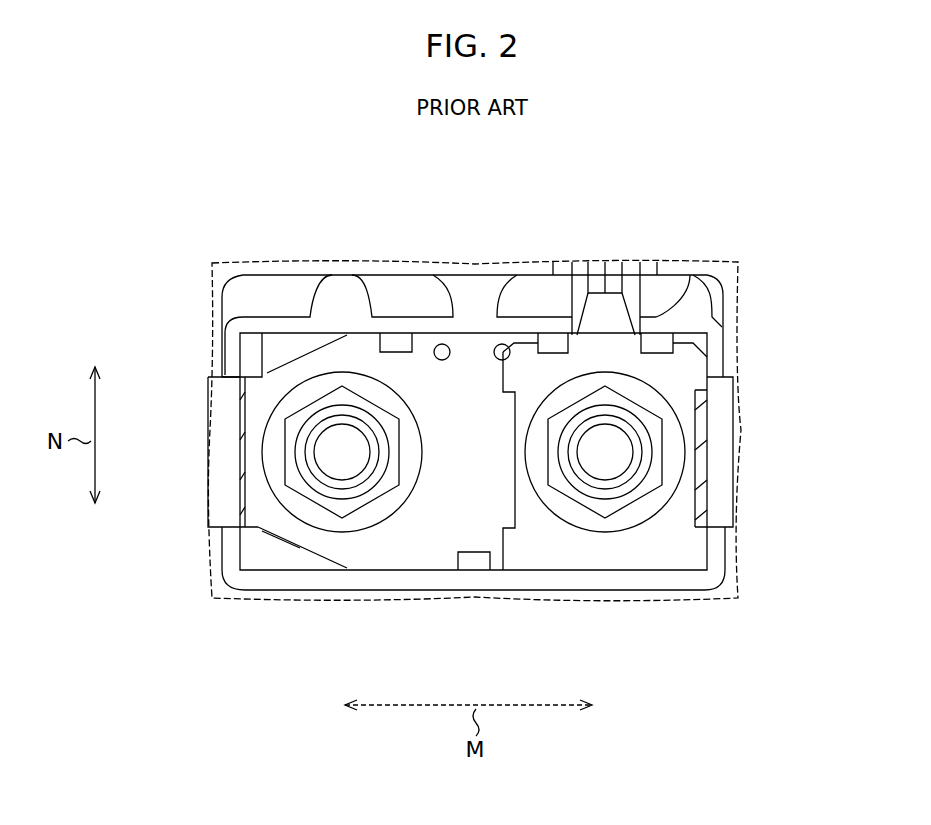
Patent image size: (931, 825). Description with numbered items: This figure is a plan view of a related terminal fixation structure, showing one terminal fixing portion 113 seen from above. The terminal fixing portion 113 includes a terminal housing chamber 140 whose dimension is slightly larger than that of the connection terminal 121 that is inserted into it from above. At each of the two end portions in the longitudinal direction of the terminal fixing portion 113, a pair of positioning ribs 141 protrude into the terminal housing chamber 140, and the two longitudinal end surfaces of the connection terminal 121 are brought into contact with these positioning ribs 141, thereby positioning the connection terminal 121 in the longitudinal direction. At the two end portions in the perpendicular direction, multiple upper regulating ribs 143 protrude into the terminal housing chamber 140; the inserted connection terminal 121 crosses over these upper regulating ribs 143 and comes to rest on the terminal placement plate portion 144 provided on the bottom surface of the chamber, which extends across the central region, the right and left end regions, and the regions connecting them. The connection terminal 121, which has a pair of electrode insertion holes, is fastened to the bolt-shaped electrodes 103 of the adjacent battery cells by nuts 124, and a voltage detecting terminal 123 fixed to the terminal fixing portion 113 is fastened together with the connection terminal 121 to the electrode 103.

The electrode 103 is at (342, 455).
The terminal fixing portion 113 is at (537, 583).
The connection terminal 121 is at (410, 540).
The voltage detecting terminal 123 is at (651, 555).
The nut 124 is at (296, 483).
The terminal housing chamber 140 is at (297, 337).
The positioning rib 141 is at (240, 497).
The upper regulating rib 143 is at (398, 338).
The terminal placement plate portion 144 is at (257, 550).